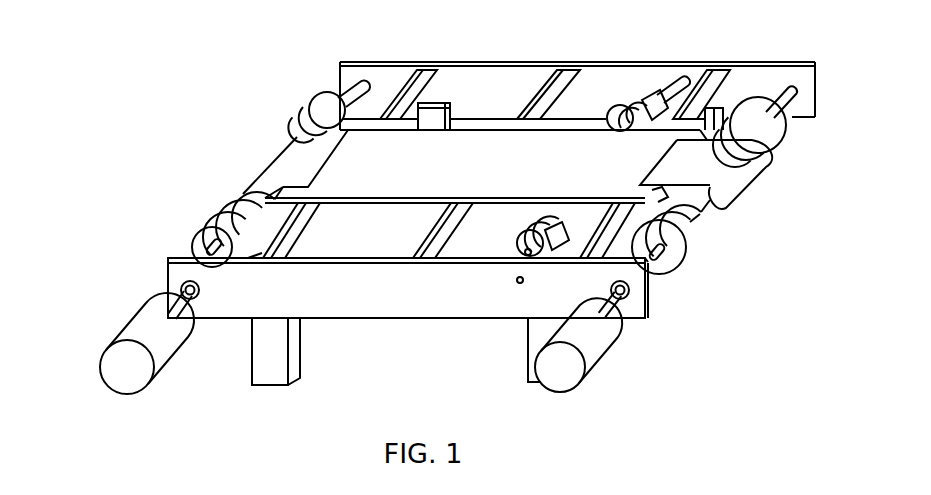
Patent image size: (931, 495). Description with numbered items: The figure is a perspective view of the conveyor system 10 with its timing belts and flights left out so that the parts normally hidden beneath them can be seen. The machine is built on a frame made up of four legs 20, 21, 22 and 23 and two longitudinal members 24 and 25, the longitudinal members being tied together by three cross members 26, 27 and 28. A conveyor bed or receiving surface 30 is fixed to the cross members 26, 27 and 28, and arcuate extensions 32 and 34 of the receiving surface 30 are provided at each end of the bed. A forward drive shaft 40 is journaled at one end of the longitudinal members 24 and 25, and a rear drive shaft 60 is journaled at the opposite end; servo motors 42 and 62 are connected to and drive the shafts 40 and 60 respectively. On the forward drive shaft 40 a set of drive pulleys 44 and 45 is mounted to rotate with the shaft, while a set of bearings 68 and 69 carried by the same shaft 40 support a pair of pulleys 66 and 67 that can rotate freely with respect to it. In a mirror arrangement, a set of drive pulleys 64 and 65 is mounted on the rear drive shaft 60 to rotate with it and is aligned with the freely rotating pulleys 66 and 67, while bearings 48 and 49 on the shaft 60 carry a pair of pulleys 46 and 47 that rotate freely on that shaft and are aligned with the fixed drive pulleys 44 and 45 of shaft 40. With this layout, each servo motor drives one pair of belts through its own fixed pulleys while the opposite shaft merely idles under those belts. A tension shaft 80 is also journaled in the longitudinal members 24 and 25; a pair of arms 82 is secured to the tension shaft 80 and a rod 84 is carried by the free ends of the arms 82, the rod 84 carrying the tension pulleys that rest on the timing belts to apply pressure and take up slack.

The conveyor system 10 is at (254, 409).
The leg 20 is at (432, 117).
The leg 21 is at (295, 352).
The leg 22 is at (714, 115).
The leg 23 is at (528, 363).
The longitudinal member 24 is at (383, 85).
The longitudinal member 25 is at (404, 304).
The cross member 26 is at (310, 211).
The cross member 27 is at (457, 218).
The cross member 28 is at (600, 218).
The receiving surface 30 is at (487, 181).
The arcuate extension 32 is at (287, 167).
The arcuate extension 34 is at (740, 185).
The forward drive shaft 40 is at (352, 93).
The servo motor 42 is at (149, 357).
The drive pulley 44 is at (238, 202).
The drive pulley 45 is at (323, 100).
The freely rotating pulley 46 is at (708, 240).
The freely rotating pulley 47 is at (787, 138).
The bearing 48 is at (712, 232).
The bearing 49 is at (795, 134).
The rear drive shaft 60 is at (704, 231).
The servo motor 62 is at (600, 348).
The drive pulley 64 is at (692, 255).
The drive pulley 65 is at (768, 154).
The freely rotating pulley 66 is at (224, 223).
The freely rotating pulley 67 is at (302, 119).
The bearing 68 is at (210, 233).
The bearing 69 is at (308, 133).
The tension shaft 80 is at (676, 86).
The arm 82 is at (690, 92).
The rod 84 is at (530, 253).